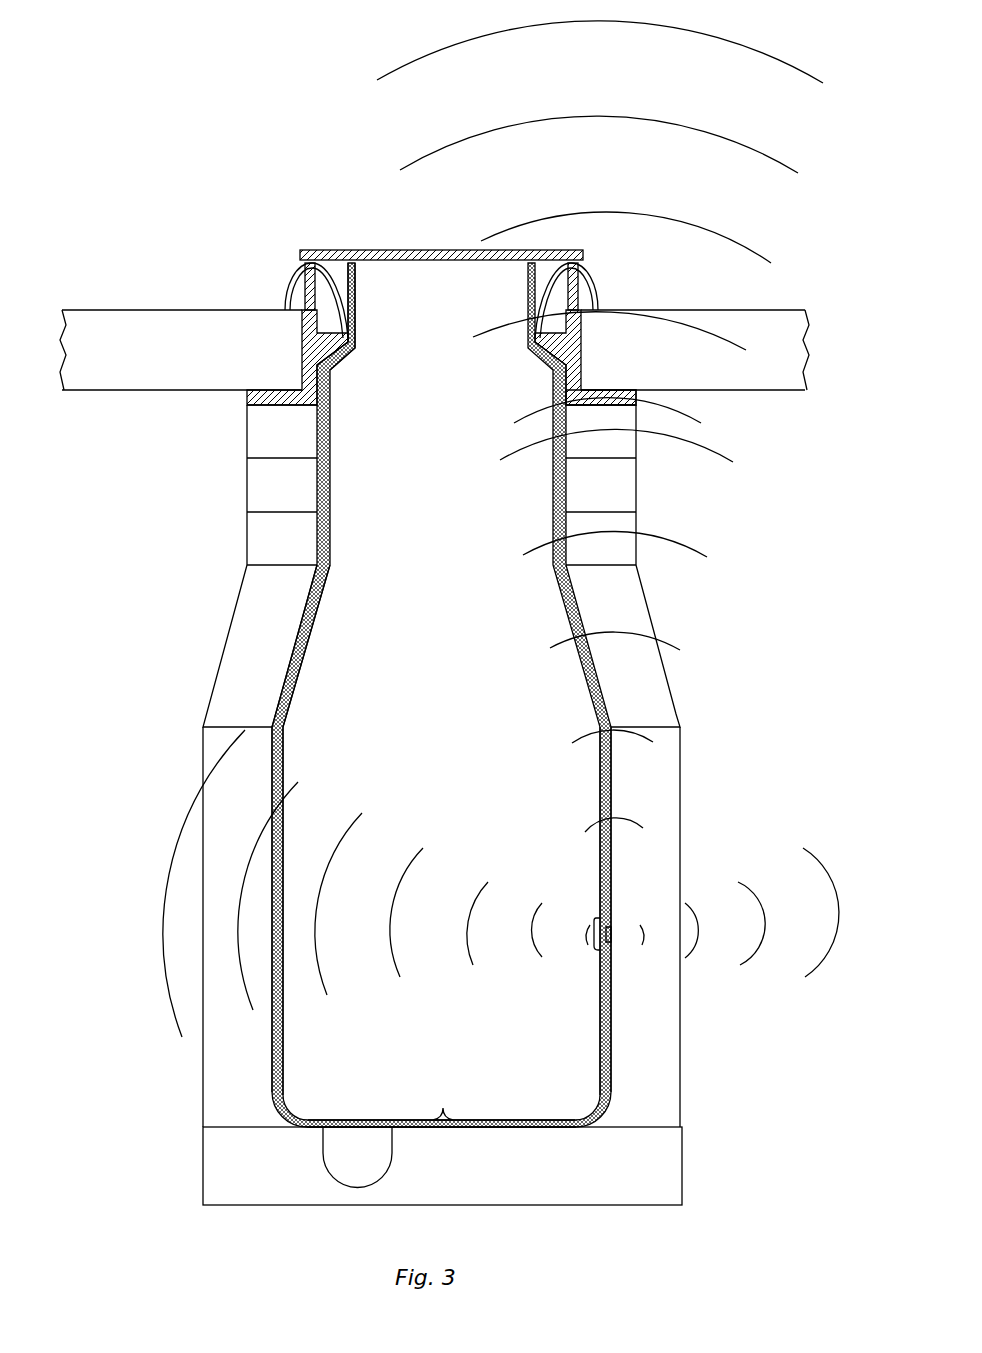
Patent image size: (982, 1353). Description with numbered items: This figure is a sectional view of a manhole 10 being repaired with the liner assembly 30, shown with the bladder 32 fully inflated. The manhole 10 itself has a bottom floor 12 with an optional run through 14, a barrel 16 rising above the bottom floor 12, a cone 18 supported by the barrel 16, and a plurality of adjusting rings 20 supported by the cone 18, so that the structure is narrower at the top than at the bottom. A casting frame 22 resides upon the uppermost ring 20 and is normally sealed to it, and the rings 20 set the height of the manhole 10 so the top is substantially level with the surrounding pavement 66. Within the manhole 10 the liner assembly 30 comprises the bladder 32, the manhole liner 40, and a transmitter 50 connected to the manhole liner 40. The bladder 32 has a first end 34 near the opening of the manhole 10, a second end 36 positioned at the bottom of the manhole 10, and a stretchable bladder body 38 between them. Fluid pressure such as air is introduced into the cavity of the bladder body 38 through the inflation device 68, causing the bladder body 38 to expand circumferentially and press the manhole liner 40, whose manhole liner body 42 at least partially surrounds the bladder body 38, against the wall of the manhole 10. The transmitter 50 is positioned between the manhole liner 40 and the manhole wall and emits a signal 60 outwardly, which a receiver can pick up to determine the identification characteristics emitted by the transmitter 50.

The manhole 10 is at (305, 174).
The bottom floor 12 is at (668, 1165).
The run through 14 is at (367, 1163).
The barrel 16 is at (673, 807).
The cone 18 is at (643, 620).
The adjusting rings 20 is at (257, 427).
The casting frame 22 is at (631, 378).
The liner assembly 30 is at (308, 741).
The bladder 32 is at (600, 790).
The first end 34 is at (355, 262).
The second end 36 is at (463, 1120).
The bladder body 38 is at (283, 768).
The manhole liner 40 is at (283, 684).
The manhole liner body 42 is at (297, 633).
The transmitter 50 is at (605, 922).
The signal 60 is at (758, 31).
The pavement 66 is at (193, 310).
The inflation device 68 is at (323, 250).